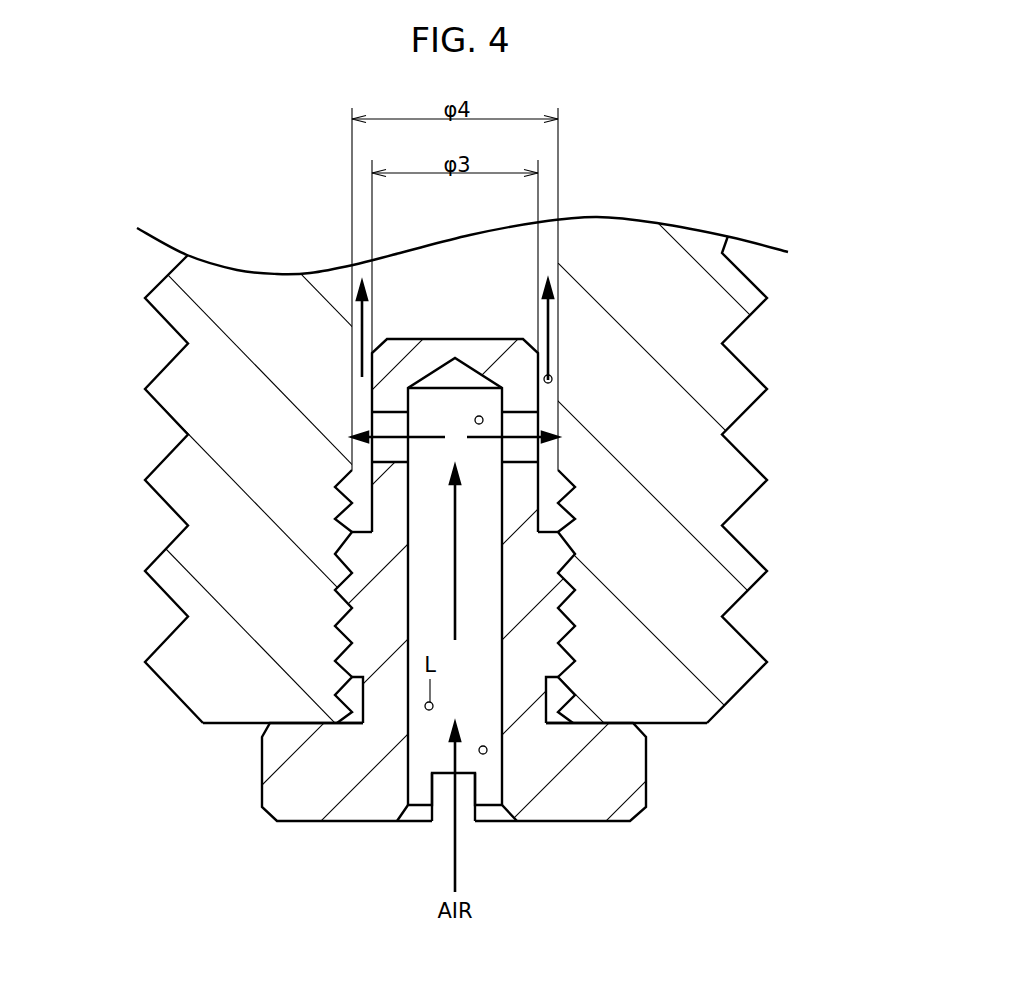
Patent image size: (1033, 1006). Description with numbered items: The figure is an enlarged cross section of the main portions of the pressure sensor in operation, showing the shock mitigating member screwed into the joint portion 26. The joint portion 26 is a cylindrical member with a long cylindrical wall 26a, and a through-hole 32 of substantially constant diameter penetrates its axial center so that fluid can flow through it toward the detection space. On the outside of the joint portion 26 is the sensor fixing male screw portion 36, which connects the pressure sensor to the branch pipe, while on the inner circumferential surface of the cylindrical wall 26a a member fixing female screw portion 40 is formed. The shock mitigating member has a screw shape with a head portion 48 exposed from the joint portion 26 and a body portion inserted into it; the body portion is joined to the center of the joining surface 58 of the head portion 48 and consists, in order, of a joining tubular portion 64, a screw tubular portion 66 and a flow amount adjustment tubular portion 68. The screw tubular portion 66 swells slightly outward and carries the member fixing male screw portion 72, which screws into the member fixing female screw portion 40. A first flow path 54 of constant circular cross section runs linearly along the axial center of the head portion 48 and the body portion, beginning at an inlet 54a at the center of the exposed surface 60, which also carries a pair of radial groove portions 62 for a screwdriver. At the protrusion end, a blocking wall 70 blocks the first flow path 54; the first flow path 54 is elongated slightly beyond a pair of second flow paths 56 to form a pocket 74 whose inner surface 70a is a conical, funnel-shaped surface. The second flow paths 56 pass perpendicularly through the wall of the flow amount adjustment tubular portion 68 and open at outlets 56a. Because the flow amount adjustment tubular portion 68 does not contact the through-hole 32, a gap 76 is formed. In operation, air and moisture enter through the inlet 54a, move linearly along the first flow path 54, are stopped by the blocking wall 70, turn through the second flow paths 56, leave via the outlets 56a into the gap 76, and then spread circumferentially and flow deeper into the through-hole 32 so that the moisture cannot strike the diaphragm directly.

The joint portion 26 is at (233, 428).
The cylindrical wall 26a is at (183, 467).
The through-hole 32 is at (445, 262).
The sensor fixing male screw portion 36 is at (747, 412).
The member fixing female screw portion 40 is at (567, 653).
The head portion 48 is at (615, 783).
The first flow path 54 is at (433, 816).
The inlet 54a is at (512, 818).
The second flow paths 56 is at (443, 445).
The outlets 56a is at (351, 449).
The joining surface 58 is at (623, 723).
The exposed surface 60 is at (598, 822).
The groove portions 62 is at (445, 775).
The joining tubular portion 64 is at (572, 697).
The screw tubular portion 66 is at (545, 583).
The flow amount adjustment tubular portion 68 is at (520, 495).
The blocking wall 70 is at (455, 551).
The inner surface 70a is at (477, 378).
The member fixing male screw portion 72 is at (572, 633).
The pocket 74 is at (455, 378).
The gap 76 is at (352, 388).